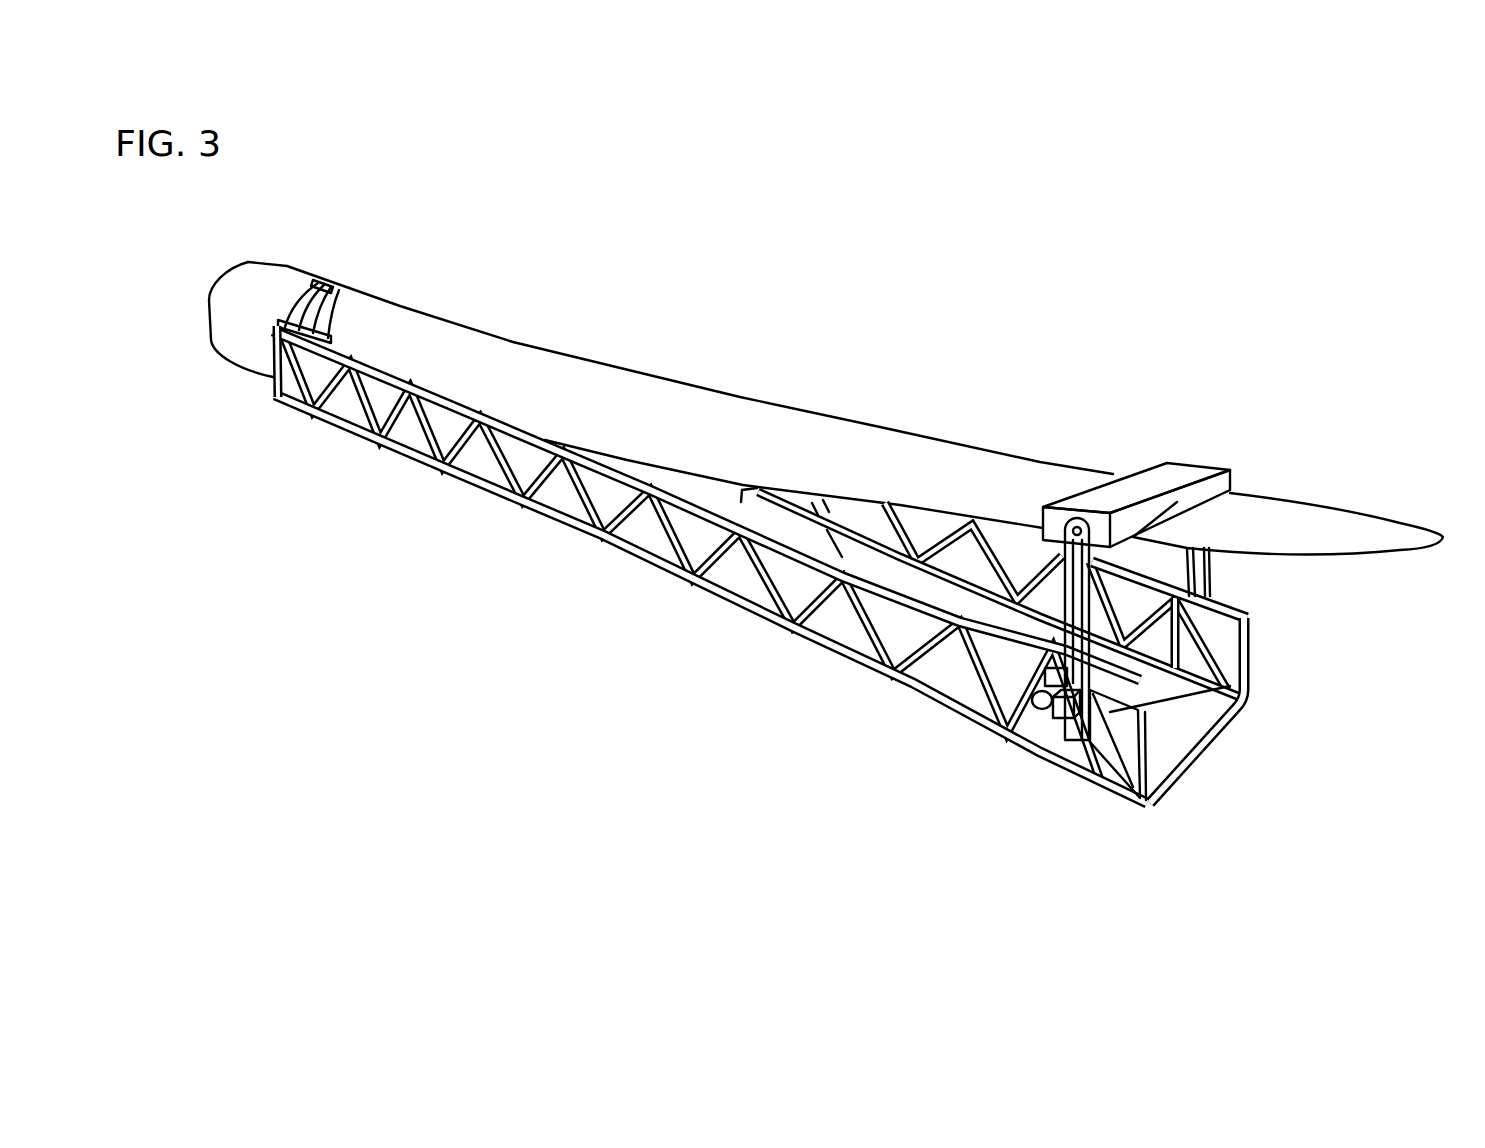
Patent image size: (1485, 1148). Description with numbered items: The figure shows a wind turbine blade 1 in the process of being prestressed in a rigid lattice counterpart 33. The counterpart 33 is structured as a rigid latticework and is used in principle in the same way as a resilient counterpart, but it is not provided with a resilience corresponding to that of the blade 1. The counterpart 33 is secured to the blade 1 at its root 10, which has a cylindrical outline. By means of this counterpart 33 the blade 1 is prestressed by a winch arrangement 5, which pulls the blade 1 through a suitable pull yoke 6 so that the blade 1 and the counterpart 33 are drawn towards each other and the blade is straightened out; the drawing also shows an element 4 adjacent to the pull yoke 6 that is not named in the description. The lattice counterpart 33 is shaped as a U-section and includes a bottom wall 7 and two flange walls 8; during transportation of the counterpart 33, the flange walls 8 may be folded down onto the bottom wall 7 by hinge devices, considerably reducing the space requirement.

The blade 1 is at (512, 362).
The root 10 is at (271, 292).
The support block 4 is at (1088, 485).
The pull yoke 6 is at (1192, 470).
The counterpart 33 is at (562, 520).
The flange walls 8 is at (760, 585).
The winch arrangement 5 is at (1047, 717).
The bottom wall 7 is at (1193, 755).